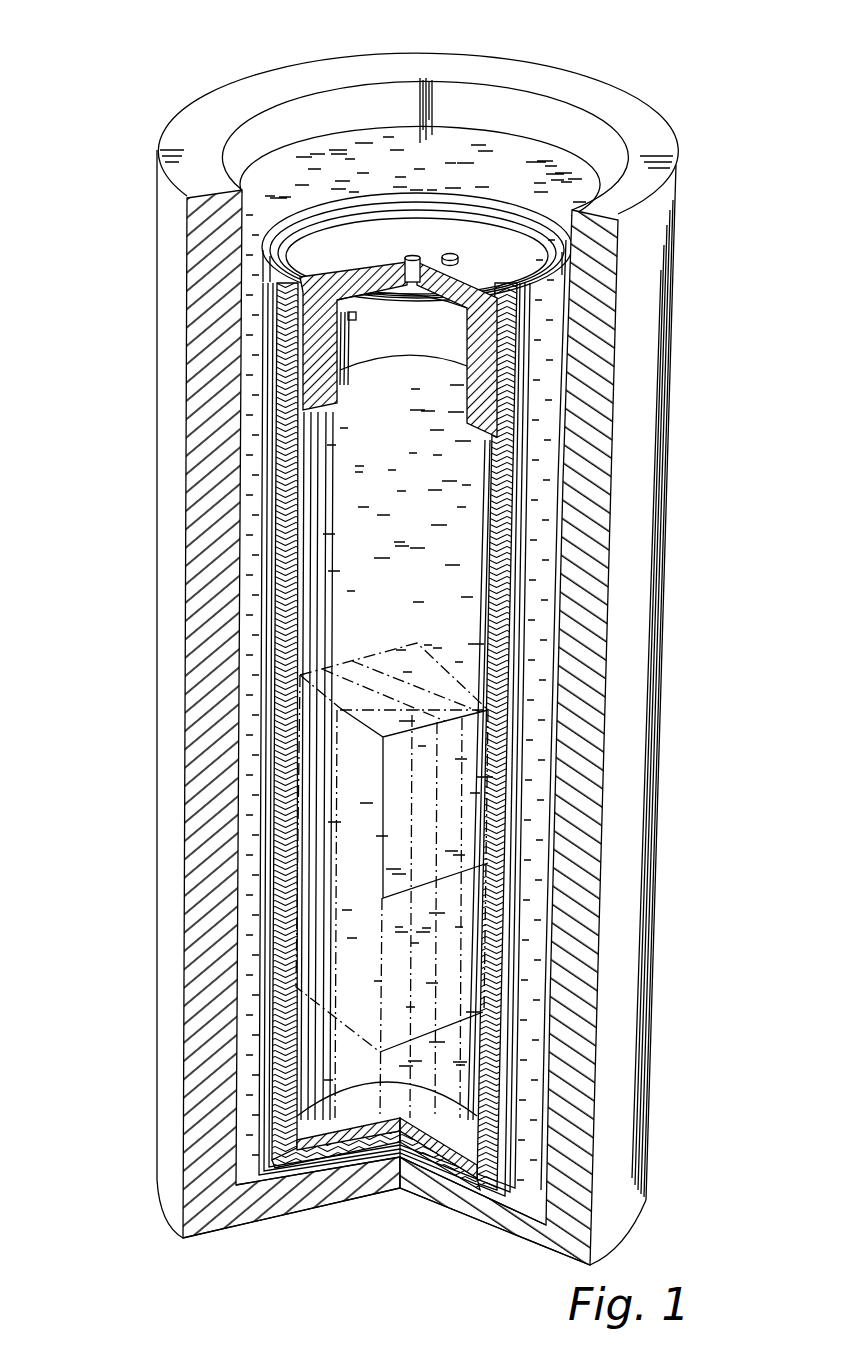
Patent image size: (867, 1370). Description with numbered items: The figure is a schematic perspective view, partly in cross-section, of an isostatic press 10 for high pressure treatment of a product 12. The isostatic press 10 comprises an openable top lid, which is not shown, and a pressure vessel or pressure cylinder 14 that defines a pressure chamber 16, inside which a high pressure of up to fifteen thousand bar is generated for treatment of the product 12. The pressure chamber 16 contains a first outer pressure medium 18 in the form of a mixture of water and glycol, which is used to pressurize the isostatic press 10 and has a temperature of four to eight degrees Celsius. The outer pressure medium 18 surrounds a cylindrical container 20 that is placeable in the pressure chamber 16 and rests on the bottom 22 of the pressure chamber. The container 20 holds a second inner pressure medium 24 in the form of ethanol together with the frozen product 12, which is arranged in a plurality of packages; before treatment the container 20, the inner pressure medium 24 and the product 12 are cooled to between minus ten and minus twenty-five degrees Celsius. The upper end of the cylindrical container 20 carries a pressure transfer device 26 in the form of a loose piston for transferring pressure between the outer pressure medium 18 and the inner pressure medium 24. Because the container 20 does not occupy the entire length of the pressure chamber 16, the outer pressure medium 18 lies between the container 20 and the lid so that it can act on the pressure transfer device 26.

The isostatic press 10 is at (430, 649).
The product 12 is at (318, 773).
The pressure cylinder 14 is at (640, 483).
The pressure chamber 16 is at (262, 137).
The outer pressure medium 18 is at (497, 163).
The cylindrical container 20 is at (264, 375).
The bottom 22 is at (252, 1178).
The inner pressure medium 24 is at (363, 503).
The pressure transfer device 26 is at (507, 258).